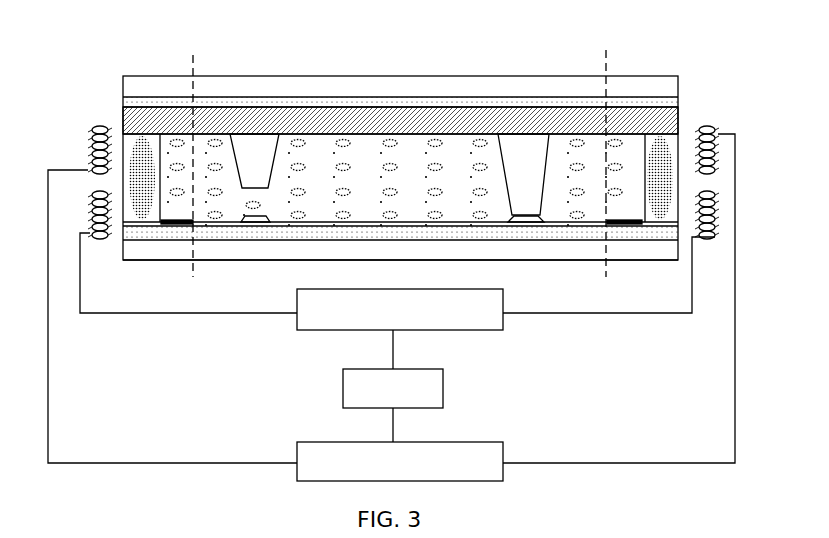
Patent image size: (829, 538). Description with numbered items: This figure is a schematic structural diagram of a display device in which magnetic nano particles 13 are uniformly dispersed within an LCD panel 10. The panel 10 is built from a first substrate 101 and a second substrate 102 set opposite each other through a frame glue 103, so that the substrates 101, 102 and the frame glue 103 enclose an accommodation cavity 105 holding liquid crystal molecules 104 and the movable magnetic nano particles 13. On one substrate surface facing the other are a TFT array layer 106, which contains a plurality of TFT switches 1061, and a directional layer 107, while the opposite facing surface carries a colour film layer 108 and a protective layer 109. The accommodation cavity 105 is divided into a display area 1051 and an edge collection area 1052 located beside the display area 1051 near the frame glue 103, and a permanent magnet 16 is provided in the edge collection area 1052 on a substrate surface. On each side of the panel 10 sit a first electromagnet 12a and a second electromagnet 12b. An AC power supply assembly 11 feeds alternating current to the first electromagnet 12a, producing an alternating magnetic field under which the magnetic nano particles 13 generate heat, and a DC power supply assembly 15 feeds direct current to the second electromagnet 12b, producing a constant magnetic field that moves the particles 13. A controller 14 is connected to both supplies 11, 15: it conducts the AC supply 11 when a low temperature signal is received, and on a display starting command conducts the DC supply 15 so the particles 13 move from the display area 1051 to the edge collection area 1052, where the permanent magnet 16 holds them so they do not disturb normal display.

The liquid crystal display panel 10 is at (252, 69).
The first substrate 101 is at (210, 253).
The second substrate 102 is at (312, 85).
The frame glue 103 is at (144, 207).
The liquid crystal molecule 104 is at (385, 140).
The accommodation cavity 105 is at (630, 38).
The display area 1051 is at (558, 145).
The edge collection area 1052 is at (166, 140).
The thin film transistor array layer 106 is at (278, 232).
The TFT switch 1061 is at (252, 224).
The directional layer 107 is at (433, 235).
The colour film layer 108 is at (492, 100).
The protective layer 109 is at (437, 118).
The AC power supply assembly 11 is at (507, 438).
The first electromagnet 12a is at (95, 115).
The second electromagnet 12b is at (100, 247).
The magnetic nano particles 13 is at (373, 200).
The controller 14 is at (339, 390).
The DC power supply assembly 15 is at (295, 334).
The permanent magnet 16 is at (167, 227).